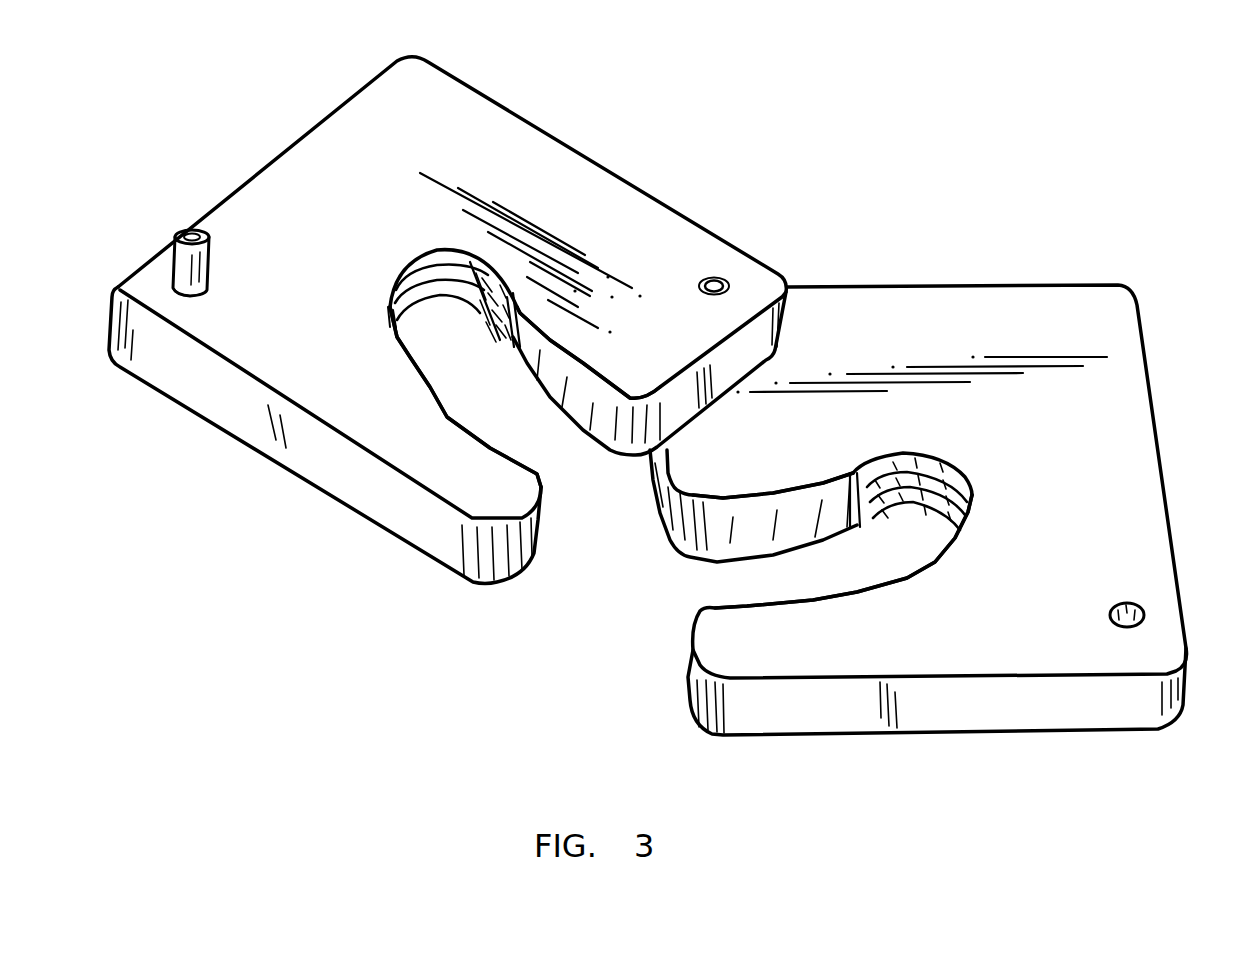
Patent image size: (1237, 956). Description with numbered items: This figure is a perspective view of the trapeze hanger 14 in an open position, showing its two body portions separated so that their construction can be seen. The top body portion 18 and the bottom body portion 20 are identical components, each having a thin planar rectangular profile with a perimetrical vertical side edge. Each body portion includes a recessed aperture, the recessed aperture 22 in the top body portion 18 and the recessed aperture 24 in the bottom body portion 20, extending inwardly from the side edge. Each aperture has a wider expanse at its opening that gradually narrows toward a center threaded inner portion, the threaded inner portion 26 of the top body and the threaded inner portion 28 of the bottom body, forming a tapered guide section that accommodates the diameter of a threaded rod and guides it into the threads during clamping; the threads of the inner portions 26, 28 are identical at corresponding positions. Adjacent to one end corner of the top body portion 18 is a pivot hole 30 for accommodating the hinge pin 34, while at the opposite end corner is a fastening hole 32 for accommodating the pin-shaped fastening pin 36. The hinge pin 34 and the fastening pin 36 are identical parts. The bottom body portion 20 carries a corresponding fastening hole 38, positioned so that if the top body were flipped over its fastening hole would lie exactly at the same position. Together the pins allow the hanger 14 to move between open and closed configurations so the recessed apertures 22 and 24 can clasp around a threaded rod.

The trapeze hanger 14 is at (947, 243).
The top body portion 18 is at (440, 58).
The bottom body portion 20 is at (1127, 285).
The recessed aperture 22 is at (603, 433).
The recessed aperture 24 is at (717, 540).
The center threaded inner portion 26 is at (470, 262).
The center threaded inner portion 28 is at (930, 477).
The pivot hole 30 is at (713, 278).
The fastening hole 32 is at (192, 297).
The hinge pin 34 is at (728, 283).
The fastening pin 36 is at (185, 230).
The fastening hole 38 is at (1113, 603).